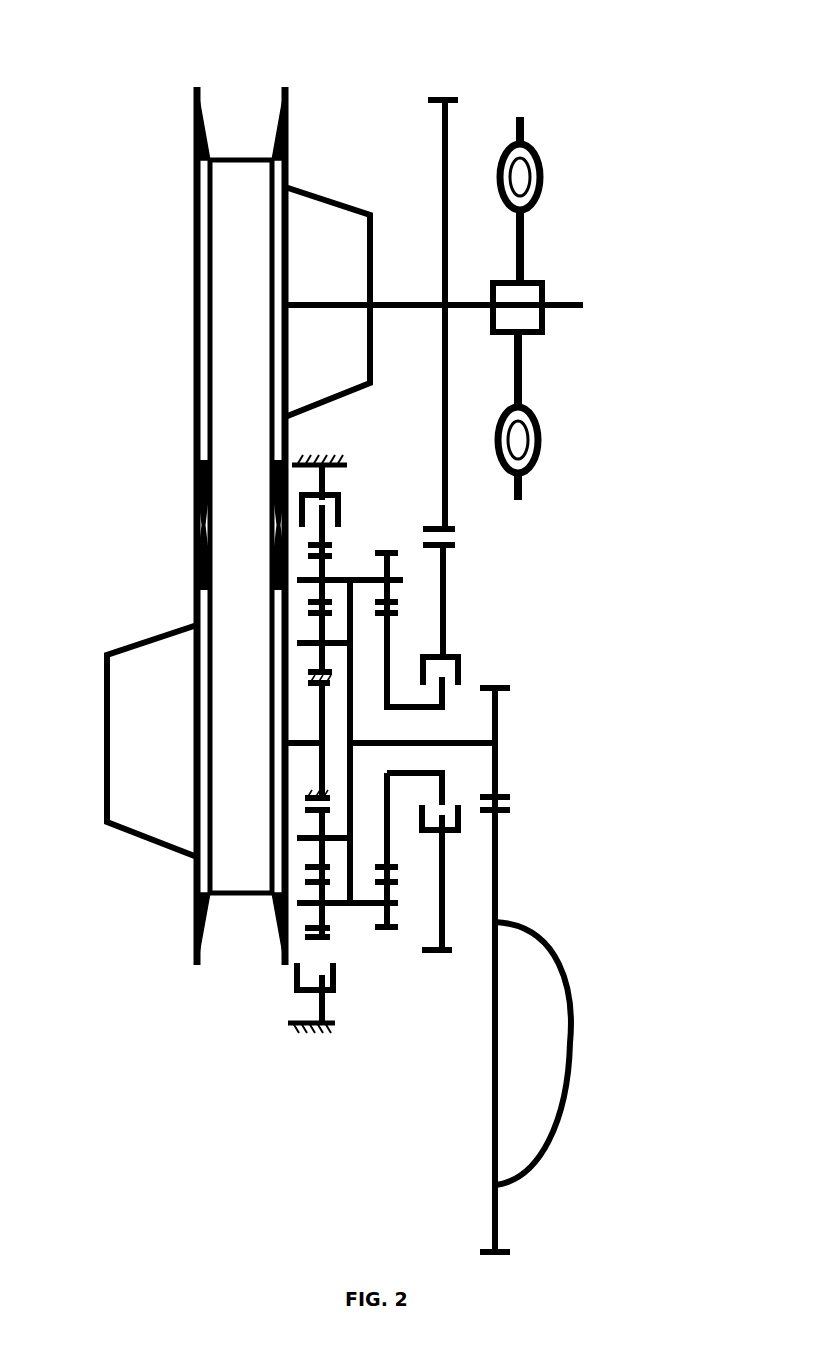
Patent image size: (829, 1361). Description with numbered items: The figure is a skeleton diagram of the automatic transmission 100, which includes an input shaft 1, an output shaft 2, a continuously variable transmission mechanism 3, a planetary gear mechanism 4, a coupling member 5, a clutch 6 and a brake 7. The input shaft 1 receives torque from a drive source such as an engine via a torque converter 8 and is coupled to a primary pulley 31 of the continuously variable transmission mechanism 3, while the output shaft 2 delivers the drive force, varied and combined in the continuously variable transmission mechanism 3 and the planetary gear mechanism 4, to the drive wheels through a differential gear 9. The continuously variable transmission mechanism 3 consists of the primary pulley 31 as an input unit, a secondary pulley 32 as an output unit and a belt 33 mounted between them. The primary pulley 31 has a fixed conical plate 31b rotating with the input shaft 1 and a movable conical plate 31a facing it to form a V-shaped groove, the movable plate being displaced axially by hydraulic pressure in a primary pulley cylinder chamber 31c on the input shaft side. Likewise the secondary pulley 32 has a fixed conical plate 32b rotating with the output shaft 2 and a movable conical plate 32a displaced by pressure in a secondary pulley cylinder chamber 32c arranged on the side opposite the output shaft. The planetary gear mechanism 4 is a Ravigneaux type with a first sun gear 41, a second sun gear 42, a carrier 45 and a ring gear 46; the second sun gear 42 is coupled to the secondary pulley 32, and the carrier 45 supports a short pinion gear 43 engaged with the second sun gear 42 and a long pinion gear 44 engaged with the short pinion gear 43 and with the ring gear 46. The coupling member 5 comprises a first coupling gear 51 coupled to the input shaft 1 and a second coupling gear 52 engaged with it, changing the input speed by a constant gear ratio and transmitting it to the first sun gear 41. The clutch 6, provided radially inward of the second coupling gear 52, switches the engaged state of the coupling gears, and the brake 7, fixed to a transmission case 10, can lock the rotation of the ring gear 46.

The automatic transmission 100 is at (619, 127).
The input shaft 1 is at (463, 305).
The output shaft 2 is at (455, 748).
The continuously variable transmission mechanism 3 is at (244, 102).
The planetary gear mechanism 4 is at (384, 1013).
The coupling member 5 is at (431, 58).
The clutch 6 is at (455, 835).
The brake 7 is at (296, 1030).
The torque converter 8 is at (523, 117).
The differential gear 9 is at (498, 878).
The transmission case 10 is at (327, 1036).
The primary pulley 31 is at (124, 256).
The movable conical plate 31a is at (292, 137).
The fixed conical plate 31b is at (191, 165).
The primary pulley cylinder chamber 31c is at (333, 235).
The secondary pulley 32 is at (84, 714).
The movable conical plate 32a is at (192, 930).
The fixed conical plate 32b is at (281, 962).
The secondary pulley cylinder chamber 32c is at (137, 828).
The belt 33 is at (250, 160).
The first sun gear 41 is at (393, 711).
The second sun gear 42 is at (322, 710).
The short pinion gear 43 is at (308, 648).
The long pinion gear 44 is at (327, 580).
The carrier 45 is at (356, 625).
The ring gear 46 is at (322, 538).
The first coupling gear 51 is at (445, 97).
The second coupling gear 52 is at (444, 618).